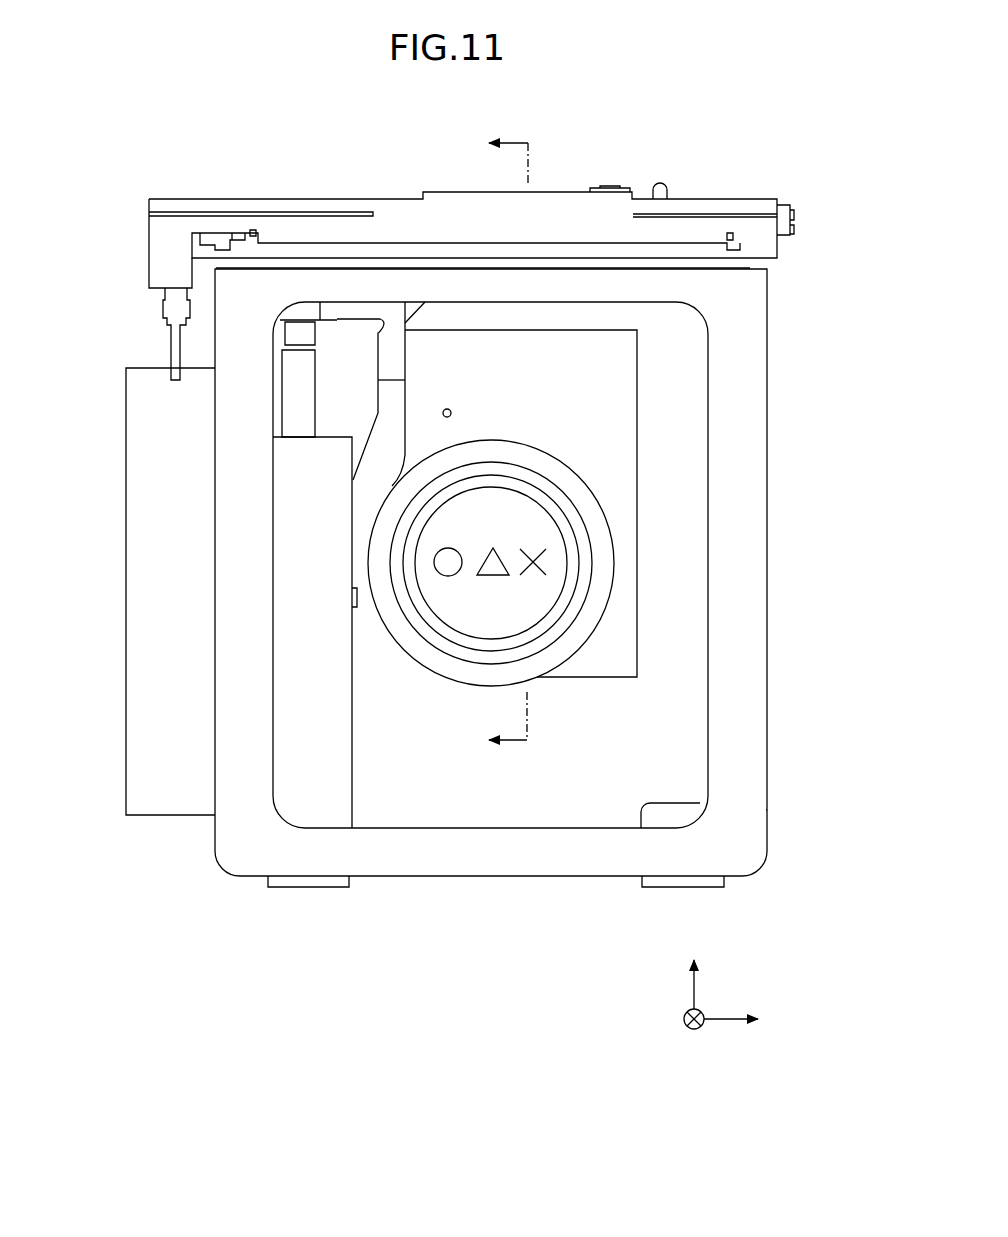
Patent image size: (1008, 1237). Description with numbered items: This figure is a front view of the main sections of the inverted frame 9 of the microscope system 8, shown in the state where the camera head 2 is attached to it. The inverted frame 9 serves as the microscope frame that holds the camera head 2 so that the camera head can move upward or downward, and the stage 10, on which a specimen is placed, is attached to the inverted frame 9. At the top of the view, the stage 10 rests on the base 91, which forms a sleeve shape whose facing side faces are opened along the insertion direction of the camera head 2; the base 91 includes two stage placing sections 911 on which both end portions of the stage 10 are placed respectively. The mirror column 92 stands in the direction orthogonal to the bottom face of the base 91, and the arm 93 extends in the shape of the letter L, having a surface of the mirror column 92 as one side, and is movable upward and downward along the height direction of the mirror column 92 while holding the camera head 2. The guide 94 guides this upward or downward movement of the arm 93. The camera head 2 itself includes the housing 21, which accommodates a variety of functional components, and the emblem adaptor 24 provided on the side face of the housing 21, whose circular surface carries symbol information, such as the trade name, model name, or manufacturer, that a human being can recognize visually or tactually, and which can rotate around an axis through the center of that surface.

The microscope system 8 is at (732, 150).
The inverted frame 9 is at (770, 357).
The base 91 is at (766, 810).
The stage placing sections 911 is at (757, 303).
The stage 10 is at (237, 198).
The mirror column 92 is at (125, 578).
The arm 93 is at (340, 352).
The guide 94 is at (297, 408).
The camera head 2 is at (640, 535).
The housing 21 is at (620, 393).
The emblem adaptor 24 is at (467, 610).